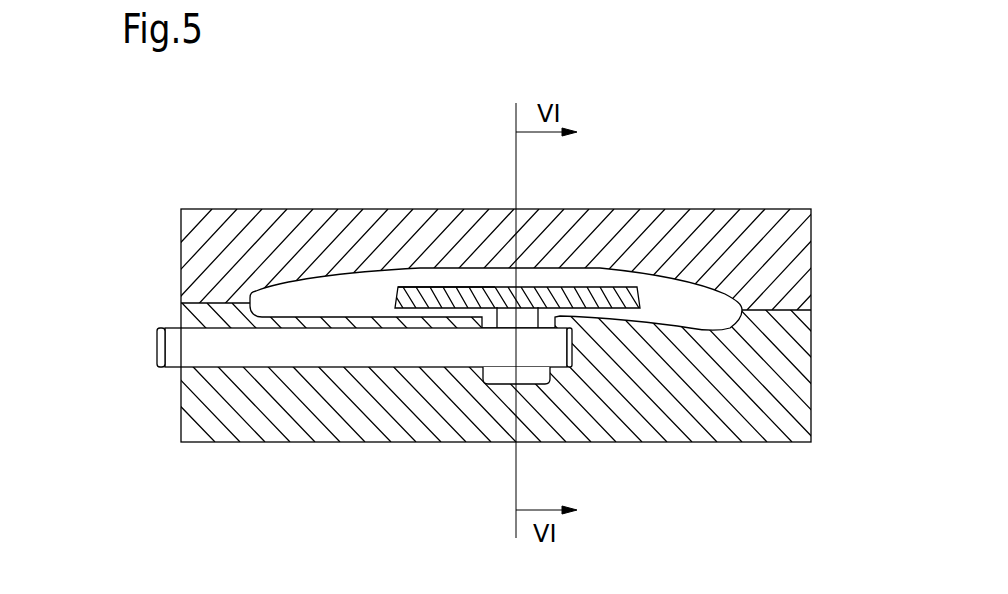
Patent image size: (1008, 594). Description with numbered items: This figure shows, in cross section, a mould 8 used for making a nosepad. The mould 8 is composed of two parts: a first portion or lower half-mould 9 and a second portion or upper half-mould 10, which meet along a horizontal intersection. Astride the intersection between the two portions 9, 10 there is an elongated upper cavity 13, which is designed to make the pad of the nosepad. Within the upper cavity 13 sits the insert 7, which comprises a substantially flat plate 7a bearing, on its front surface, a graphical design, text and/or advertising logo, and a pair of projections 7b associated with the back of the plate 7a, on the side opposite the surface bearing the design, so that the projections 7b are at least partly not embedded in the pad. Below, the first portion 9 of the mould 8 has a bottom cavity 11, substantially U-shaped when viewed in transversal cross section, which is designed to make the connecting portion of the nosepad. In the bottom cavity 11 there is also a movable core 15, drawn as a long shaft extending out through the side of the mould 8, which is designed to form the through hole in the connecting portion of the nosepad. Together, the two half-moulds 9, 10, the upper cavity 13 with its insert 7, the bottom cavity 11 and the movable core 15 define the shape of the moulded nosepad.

The insert 7 is at (623, 287).
The plate 7a is at (438, 287).
The projections 7b is at (505, 320).
The mould 8 is at (757, 210).
The first portion (lower half-mould) 9 is at (792, 405).
The second portion (upper half-mould) 10 is at (797, 254).
The bottom cavity 11 is at (502, 377).
The upper cavity 13 is at (358, 302).
The movable core 15 is at (172, 348).